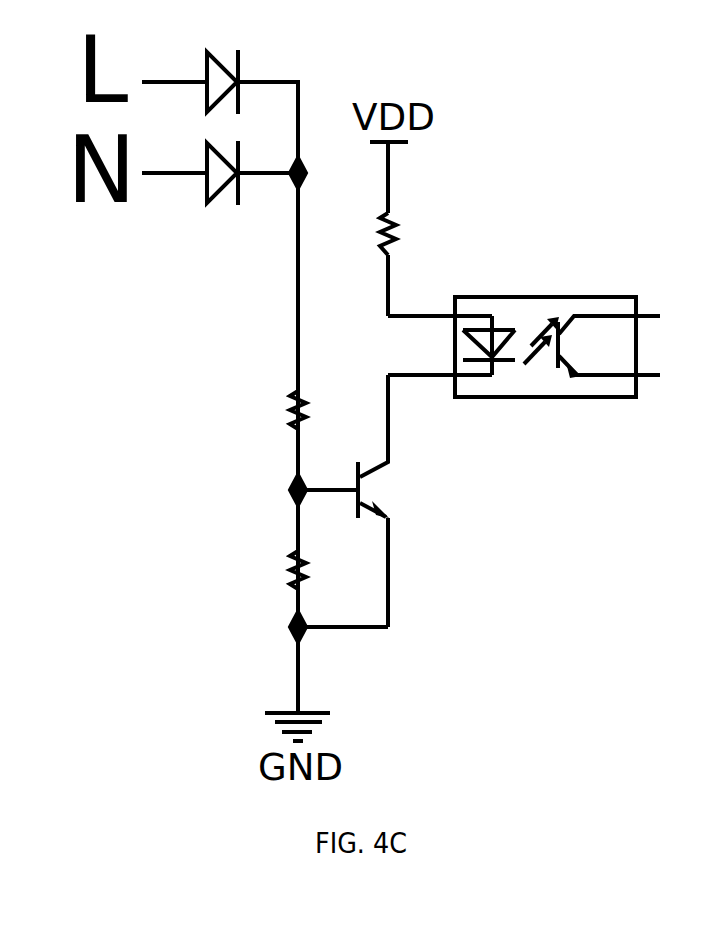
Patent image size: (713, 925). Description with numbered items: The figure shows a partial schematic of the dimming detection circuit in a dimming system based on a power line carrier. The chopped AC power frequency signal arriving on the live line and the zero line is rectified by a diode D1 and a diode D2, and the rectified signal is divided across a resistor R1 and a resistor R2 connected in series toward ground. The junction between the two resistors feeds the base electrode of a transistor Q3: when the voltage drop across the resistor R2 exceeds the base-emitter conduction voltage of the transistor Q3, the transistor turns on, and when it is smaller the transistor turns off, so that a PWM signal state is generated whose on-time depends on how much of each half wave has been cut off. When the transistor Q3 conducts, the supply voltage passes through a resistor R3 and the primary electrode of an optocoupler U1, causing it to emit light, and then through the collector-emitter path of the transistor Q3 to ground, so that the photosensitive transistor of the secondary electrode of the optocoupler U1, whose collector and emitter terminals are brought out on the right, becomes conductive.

The diode D1 is at (248, 72).
The diode D2 is at (248, 167).
The resistor R1 is at (322, 412).
The resistor R2 is at (326, 574).
The resistor R3 is at (412, 240).
The optocoupler U1 is at (556, 320).
The transistor Q3 is at (366, 501).